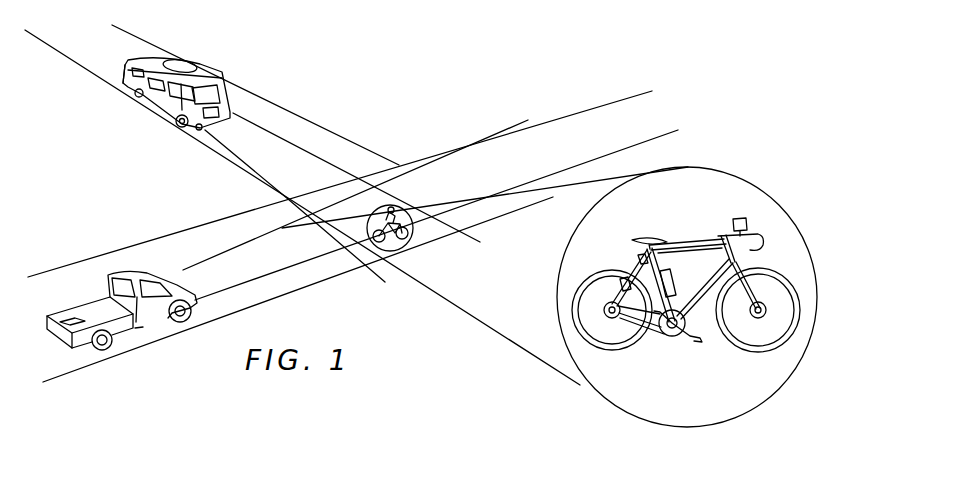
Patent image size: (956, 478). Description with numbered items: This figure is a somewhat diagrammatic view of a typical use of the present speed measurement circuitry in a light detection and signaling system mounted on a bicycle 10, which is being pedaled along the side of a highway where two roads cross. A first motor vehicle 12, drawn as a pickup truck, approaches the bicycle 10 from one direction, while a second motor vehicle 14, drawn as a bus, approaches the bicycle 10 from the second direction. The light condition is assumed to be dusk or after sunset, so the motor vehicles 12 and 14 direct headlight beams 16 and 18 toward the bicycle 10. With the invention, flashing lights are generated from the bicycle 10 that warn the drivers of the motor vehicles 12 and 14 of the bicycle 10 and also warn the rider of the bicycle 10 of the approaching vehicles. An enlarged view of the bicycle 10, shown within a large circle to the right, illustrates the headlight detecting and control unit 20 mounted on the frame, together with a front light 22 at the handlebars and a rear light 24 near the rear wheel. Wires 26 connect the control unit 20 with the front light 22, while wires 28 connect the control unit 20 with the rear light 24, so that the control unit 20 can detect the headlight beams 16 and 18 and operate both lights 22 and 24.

The bicycle 10 is at (410, 190).
The first motor vehicle 12 is at (145, 313).
The second motor vehicle 14 is at (207, 61).
The headlight beam 16 is at (257, 254).
The headlight beam 18 is at (276, 167).
The headlight detecting and control unit 20 is at (678, 270).
The front light 22 is at (740, 219).
The rear light 24 is at (622, 280).
The wires 26 is at (692, 242).
The wires 28 is at (642, 258).